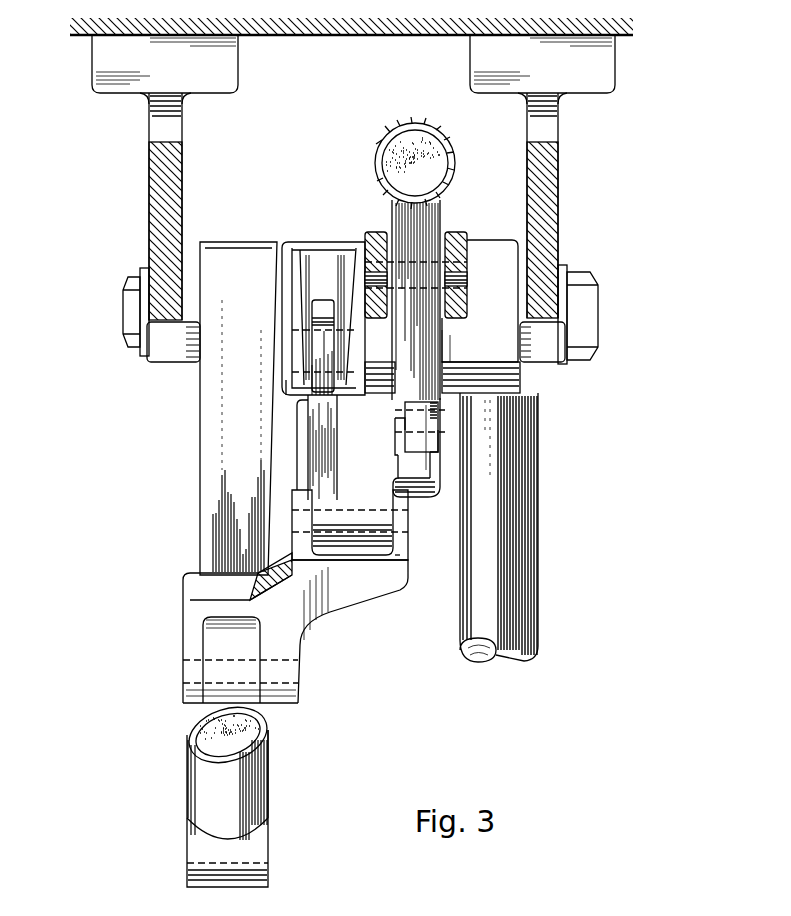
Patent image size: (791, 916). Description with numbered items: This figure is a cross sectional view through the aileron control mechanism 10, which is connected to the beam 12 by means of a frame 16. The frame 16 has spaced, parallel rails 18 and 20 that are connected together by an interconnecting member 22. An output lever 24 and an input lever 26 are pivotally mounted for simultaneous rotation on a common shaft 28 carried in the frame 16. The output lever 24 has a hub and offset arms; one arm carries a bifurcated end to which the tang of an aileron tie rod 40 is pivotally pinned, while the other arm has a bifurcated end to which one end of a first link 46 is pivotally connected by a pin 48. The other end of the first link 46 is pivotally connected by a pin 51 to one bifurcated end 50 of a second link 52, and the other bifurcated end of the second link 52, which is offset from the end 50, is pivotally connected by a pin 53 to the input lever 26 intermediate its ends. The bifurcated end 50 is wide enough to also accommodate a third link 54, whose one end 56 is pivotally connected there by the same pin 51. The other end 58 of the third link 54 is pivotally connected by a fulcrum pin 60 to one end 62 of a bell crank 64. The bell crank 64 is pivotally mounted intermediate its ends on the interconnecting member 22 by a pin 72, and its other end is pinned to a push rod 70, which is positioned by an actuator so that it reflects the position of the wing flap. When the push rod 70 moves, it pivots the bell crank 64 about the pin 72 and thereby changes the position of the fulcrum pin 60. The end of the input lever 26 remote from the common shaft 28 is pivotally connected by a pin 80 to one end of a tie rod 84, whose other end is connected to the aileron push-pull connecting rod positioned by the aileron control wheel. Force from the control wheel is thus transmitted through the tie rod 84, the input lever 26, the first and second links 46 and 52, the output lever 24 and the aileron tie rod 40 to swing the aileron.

The control mechanism 10 is at (617, 195).
The beam 12 is at (291, 37).
The frame 16 is at (122, 133).
The rail 18 is at (149, 165).
The rail 20 is at (560, 122).
The interconnecting member 22 is at (455, 232).
The output lever 24 is at (322, 242).
The input lever 26 is at (247, 242).
The common shaft 28 is at (600, 320).
The aileron tie rod 40 is at (540, 535).
The first link 46 is at (306, 420).
The pin 48 is at (300, 362).
The bifurcated end 50 is at (297, 486).
The pin 51 is at (405, 527).
The second link 52 is at (320, 627).
The pin 53 is at (300, 668).
The third link 54 is at (436, 488).
The end 56 is at (375, 560).
The end 58 is at (405, 408).
The fulcrum pin 60 is at (395, 428).
The end 62 is at (395, 446).
The bell crank 64 is at (447, 348).
The push rod 70 is at (410, 124).
The pin 72 is at (467, 283).
The pin 80 is at (187, 852).
The tie rod 84 is at (187, 786).